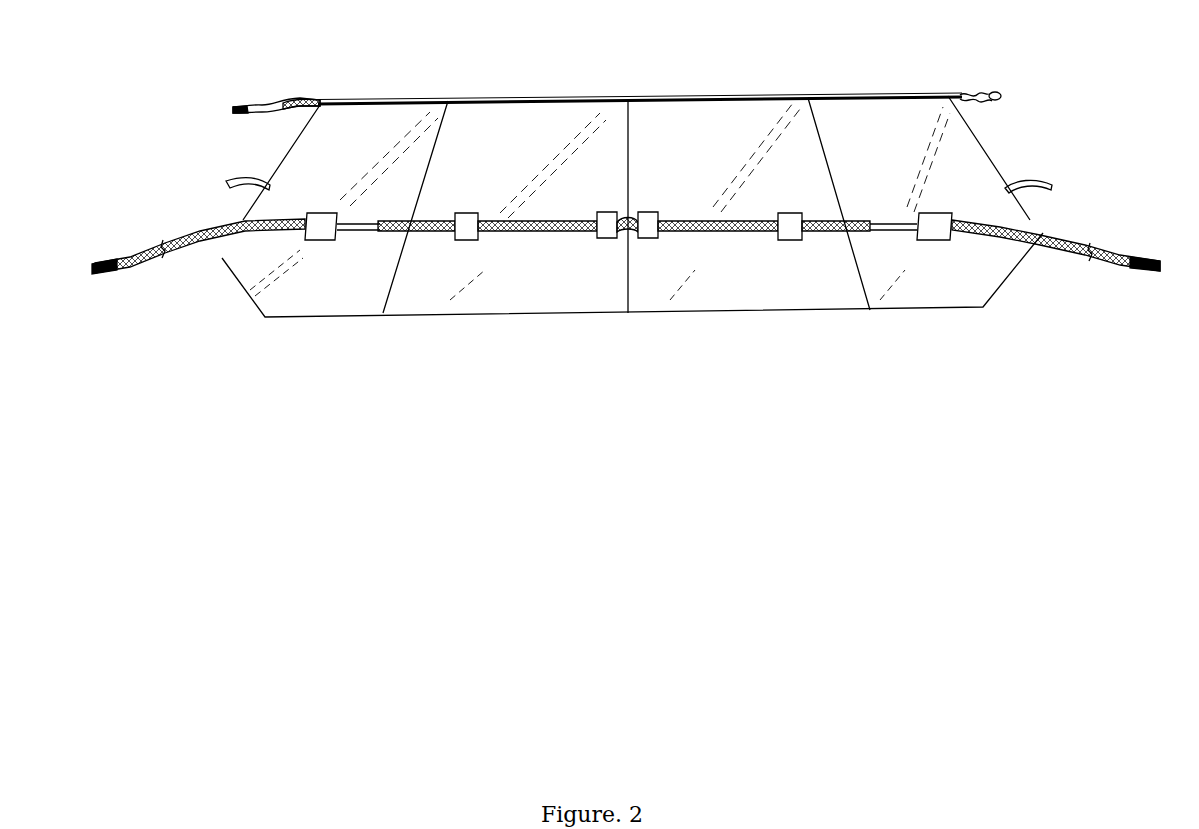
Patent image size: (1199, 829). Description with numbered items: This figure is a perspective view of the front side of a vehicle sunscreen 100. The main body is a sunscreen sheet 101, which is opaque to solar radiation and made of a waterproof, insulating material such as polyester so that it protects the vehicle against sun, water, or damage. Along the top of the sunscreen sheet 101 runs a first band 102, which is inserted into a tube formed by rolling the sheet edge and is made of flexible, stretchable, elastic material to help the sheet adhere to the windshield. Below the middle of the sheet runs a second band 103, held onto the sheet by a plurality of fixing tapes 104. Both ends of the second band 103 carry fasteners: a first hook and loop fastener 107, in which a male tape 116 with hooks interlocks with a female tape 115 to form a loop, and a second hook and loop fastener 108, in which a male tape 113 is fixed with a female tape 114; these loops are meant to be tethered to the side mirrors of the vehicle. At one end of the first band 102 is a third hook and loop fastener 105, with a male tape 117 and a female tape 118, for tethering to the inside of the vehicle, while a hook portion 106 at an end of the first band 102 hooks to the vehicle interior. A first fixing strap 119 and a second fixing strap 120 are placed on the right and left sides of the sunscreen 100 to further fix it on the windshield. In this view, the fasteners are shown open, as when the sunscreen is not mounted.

The sunscreen 100 is at (553, 315).
The sunscreen sheet 101 is at (545, 110).
The first band 102 is at (720, 97).
The second band 103 is at (498, 238).
The fixing tape 104 is at (322, 241).
The third hook and loop fastener 105 is at (262, 107).
The hook portion 106 is at (982, 91).
The first hook and loop fastener 107 is at (1067, 247).
The second hook and loop fastener 108 is at (192, 250).
The male tape 113 is at (110, 263).
The female tape 114 is at (372, 232).
The female tape 115 is at (920, 241).
The male tape 116 is at (1148, 260).
The male tape 117 is at (236, 107).
The female tape 118 is at (292, 101).
The first fixing strap 119 is at (245, 180).
The second fixing strap 120 is at (1038, 180).